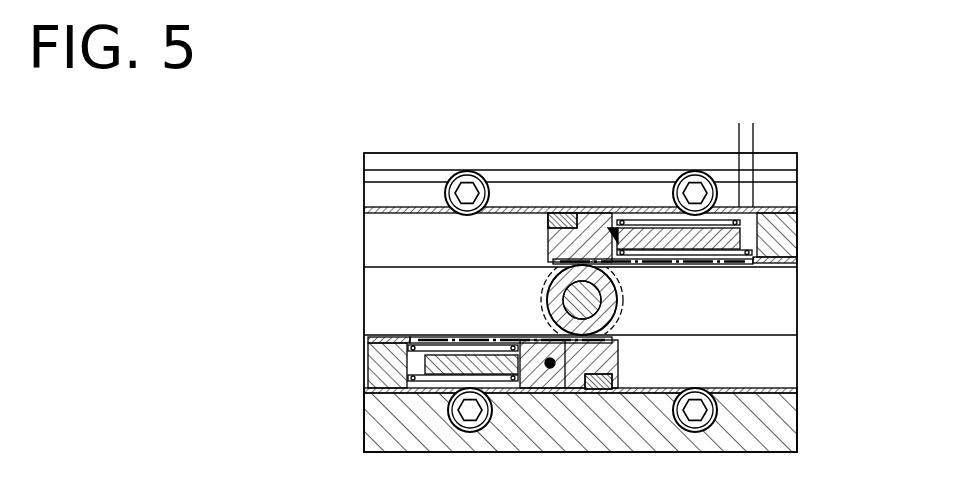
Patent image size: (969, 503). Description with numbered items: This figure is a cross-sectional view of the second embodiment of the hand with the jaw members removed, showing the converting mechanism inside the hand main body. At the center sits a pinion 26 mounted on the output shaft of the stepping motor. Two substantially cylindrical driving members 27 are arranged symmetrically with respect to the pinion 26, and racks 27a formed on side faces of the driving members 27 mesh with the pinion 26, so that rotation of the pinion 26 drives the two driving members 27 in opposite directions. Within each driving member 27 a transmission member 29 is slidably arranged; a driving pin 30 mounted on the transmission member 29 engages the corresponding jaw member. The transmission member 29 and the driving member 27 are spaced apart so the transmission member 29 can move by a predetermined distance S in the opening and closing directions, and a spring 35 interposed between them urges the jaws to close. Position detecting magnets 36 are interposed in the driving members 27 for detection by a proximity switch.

The pinion 26 is at (607, 293).
The driving member 27 is at (598, 212).
The rack 27a is at (733, 263).
The transmission member 29 is at (640, 228).
The driving pin 30 is at (614, 232).
The spring 35 is at (710, 263).
The position detecting magnet 36 is at (560, 213).
The predetermined distance S is at (703, 135).